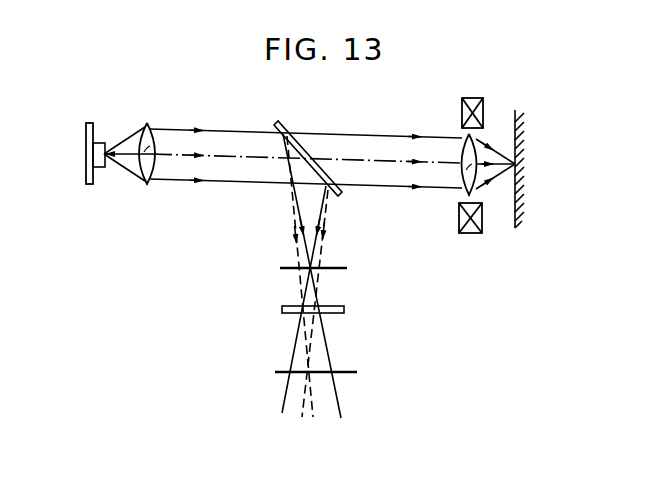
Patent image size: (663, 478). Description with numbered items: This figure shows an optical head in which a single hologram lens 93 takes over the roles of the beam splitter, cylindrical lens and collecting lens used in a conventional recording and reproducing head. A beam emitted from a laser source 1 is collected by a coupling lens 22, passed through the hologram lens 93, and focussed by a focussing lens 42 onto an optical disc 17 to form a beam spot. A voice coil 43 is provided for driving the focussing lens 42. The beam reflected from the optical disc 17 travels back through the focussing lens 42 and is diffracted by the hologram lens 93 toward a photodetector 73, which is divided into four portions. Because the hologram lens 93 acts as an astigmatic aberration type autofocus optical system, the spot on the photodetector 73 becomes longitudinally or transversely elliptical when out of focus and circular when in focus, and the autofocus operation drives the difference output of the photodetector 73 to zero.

The laser source 1 is at (86, 133).
The coupling lens 22 is at (156, 103).
The hologram lens 93 is at (281, 121).
The focussing lens 42 is at (463, 148).
The voice coil 43 is at (480, 98).
The optical disc 17 is at (514, 112).
The photodetector 73 is at (345, 310).